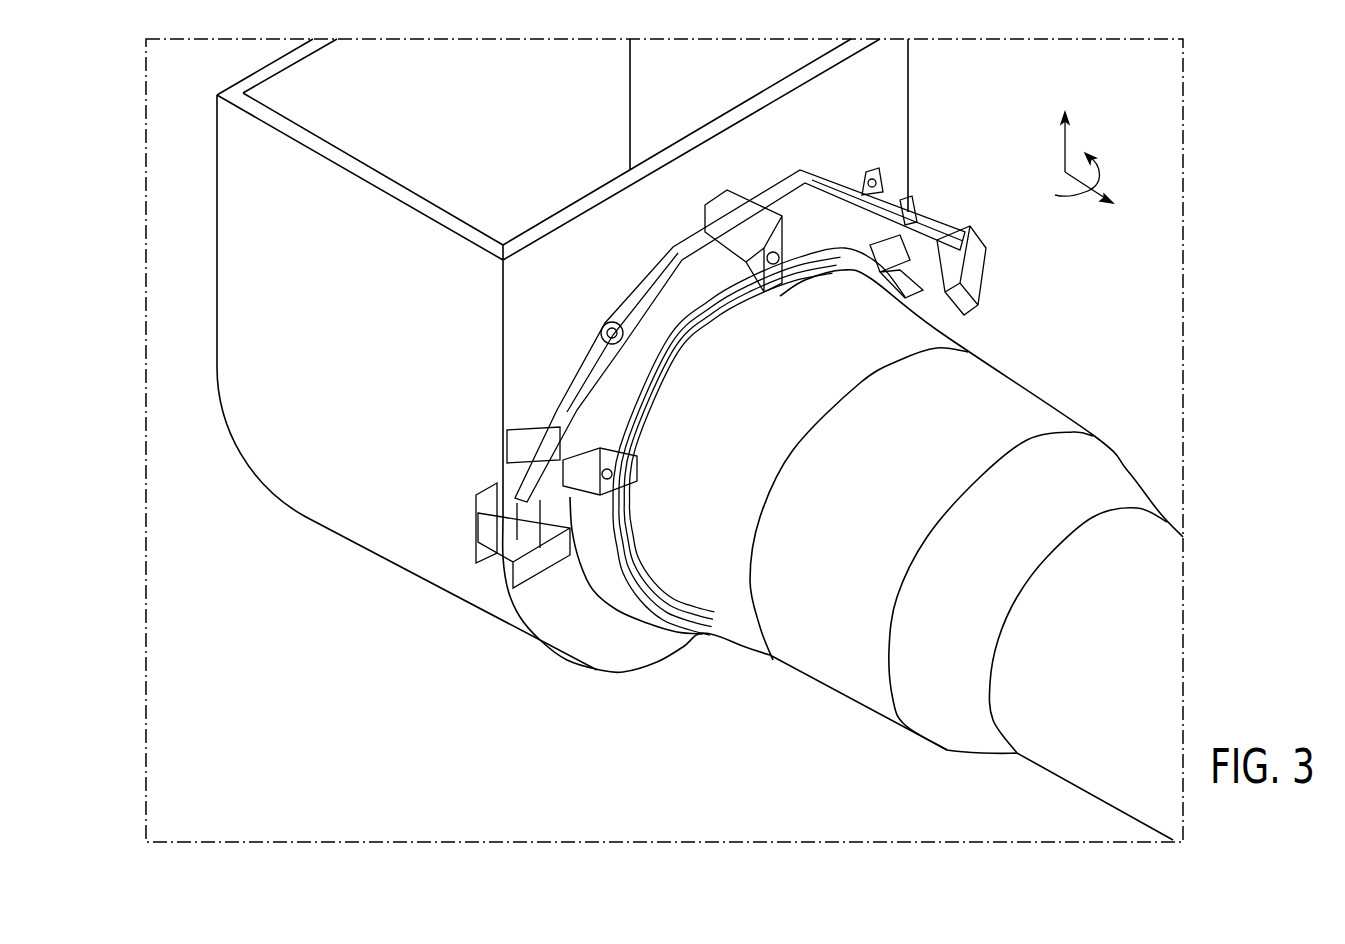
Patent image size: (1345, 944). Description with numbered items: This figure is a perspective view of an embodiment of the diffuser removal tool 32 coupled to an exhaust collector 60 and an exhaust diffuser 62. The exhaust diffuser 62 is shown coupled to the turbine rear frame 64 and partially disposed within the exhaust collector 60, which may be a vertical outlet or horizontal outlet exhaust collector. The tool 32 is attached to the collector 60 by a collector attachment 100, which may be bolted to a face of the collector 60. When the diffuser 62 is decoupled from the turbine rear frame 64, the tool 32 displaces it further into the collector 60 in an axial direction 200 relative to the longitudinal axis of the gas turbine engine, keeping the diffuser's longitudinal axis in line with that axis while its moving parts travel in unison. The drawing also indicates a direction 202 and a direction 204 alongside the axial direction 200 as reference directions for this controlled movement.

The diffuser removal tool 32 is at (1002, 263).
The exhaust collector 60 is at (908, 122).
The exhaust diffuser 62 is at (793, 238).
The turbine rear frame 64 is at (825, 305).
The collector attachment 100 is at (503, 458).
The axial direction 200 is at (1075, 180).
The vertical axis 202 is at (1066, 152).
The rotation direction 204 is at (1097, 180).